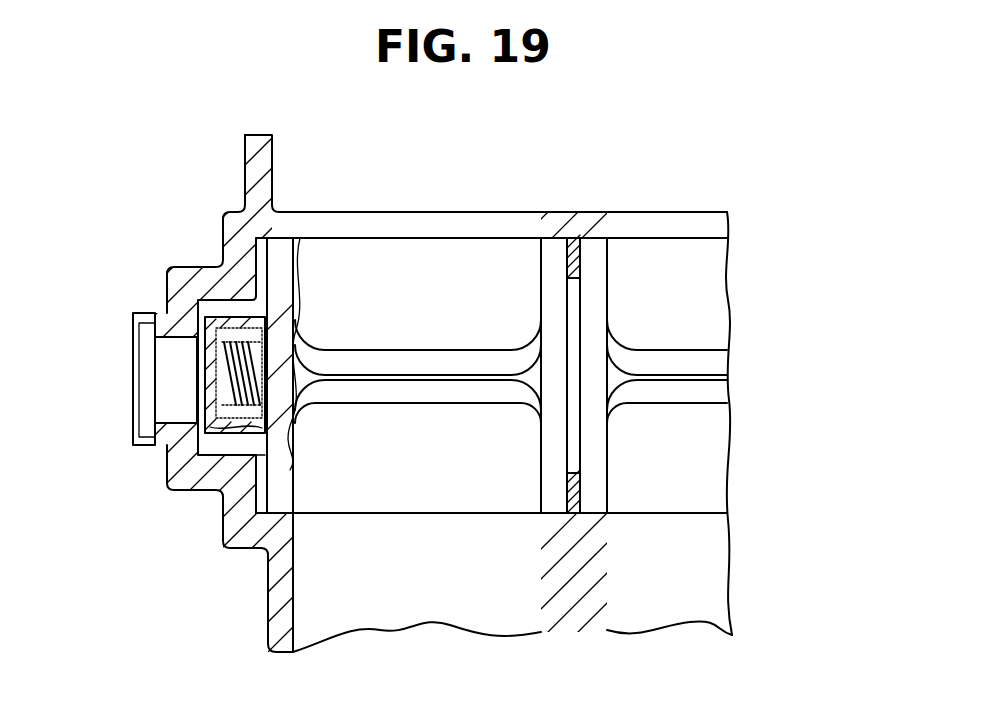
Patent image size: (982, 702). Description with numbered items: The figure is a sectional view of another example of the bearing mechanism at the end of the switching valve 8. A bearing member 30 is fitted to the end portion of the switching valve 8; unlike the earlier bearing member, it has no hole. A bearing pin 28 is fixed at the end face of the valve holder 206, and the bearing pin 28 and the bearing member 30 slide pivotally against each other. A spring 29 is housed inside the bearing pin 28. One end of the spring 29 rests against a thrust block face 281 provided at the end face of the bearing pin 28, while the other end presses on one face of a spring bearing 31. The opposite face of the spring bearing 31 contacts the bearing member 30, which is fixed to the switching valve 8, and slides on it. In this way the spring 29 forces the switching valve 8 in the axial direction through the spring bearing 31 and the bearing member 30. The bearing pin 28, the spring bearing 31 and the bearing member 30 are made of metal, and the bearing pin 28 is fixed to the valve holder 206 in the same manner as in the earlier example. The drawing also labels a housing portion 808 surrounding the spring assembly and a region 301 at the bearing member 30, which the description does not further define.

The valve holder 206 is at (245, 150).
The seal holder 808 is at (235, 318).
The bearing member 30 is at (300, 238).
The switching valve 8 is at (608, 238).
The spring 29 is at (173, 335).
The spring bearing 31 is at (197, 363).
The bearing pin 28 is at (133, 400).
The thrust block face 281 is at (287, 410).
The sleeve end 301 is at (283, 447).